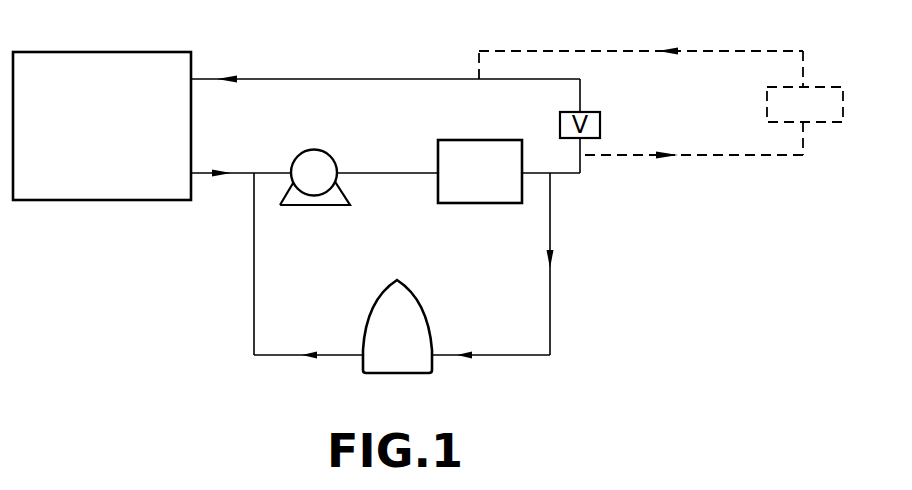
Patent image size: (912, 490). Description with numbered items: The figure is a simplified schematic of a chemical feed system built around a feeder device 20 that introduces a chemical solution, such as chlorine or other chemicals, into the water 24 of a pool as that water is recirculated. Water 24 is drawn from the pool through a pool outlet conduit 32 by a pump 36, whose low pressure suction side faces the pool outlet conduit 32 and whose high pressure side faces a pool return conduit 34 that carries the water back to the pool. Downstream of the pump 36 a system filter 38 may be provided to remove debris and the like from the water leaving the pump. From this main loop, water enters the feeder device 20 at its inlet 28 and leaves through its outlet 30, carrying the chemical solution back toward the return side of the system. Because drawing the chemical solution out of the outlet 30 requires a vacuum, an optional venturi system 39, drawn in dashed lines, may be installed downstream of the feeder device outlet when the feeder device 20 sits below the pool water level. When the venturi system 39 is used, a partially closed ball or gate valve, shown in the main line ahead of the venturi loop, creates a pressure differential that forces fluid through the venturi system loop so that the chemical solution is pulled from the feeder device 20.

The feeder device 20 is at (382, 355).
The water 24 is at (88, 135).
The inlet 28 is at (435, 352).
The outlet 30 is at (362, 353).
The pool outlet conduit 32 is at (243, 173).
The pool return conduit 34 is at (265, 79).
The pump 36 is at (314, 150).
The system filter 38 is at (463, 185).
The venturi system 39 is at (820, 123).